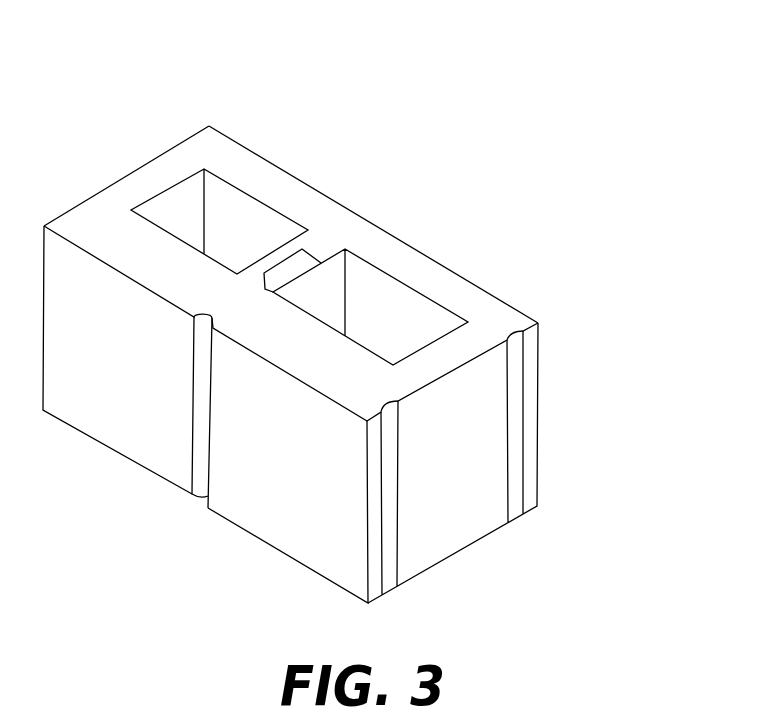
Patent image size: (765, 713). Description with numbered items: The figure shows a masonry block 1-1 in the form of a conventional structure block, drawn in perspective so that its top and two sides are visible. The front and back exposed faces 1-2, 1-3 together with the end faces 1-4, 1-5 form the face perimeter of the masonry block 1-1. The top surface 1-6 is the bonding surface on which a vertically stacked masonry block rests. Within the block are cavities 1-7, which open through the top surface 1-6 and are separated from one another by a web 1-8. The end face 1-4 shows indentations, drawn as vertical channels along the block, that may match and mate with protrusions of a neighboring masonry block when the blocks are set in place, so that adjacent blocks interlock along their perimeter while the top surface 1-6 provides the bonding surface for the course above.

The masonry block 1-1 is at (350, 77).
The front exposed face 1-2 is at (188, 503).
The back exposed face 1-3 is at (485, 267).
The end face 1-4 is at (467, 518).
The end face 1-5 is at (147, 135).
The top surface 1-6 is at (143, 166).
The cavities 1-7 is at (401, 315).
The web 1-8 is at (307, 253).